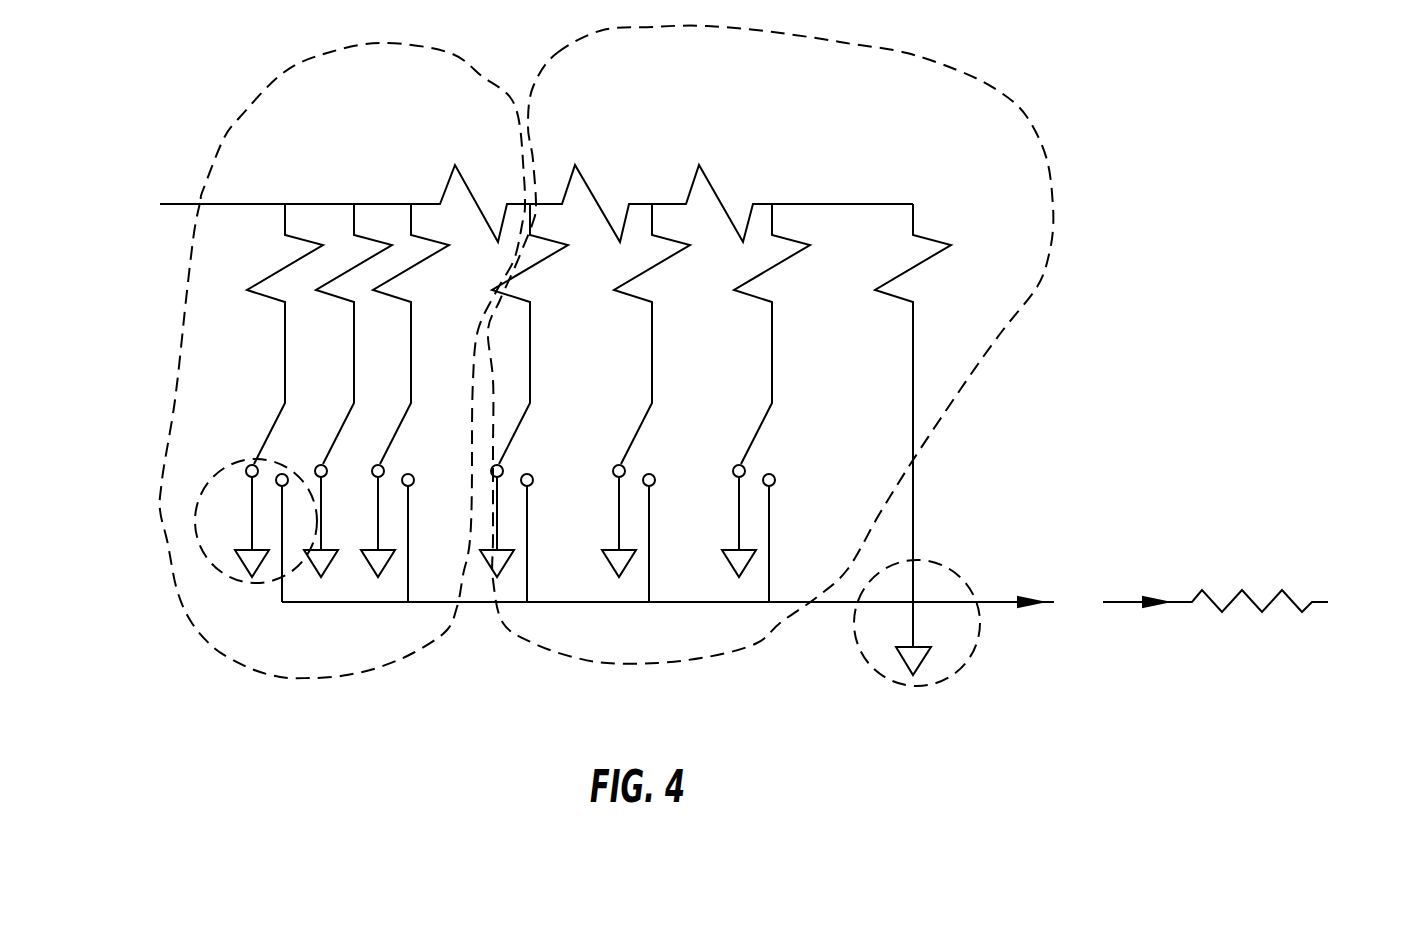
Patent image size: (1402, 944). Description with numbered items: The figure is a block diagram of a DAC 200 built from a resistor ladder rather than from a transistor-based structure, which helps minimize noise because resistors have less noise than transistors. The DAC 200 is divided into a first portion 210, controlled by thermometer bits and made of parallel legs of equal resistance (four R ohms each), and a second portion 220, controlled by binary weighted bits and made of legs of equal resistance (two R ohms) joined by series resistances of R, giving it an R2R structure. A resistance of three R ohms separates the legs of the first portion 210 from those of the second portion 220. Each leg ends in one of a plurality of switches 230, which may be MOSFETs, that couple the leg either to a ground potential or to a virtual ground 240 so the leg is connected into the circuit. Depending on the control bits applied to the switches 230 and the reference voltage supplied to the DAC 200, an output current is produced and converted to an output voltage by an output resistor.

The DAC 200 is at (123, 133).
The first portion 210 is at (202, 633).
The second portion 220 is at (1052, 187).
The switches 230 is at (205, 560).
The virtual ground 240 is at (938, 563).